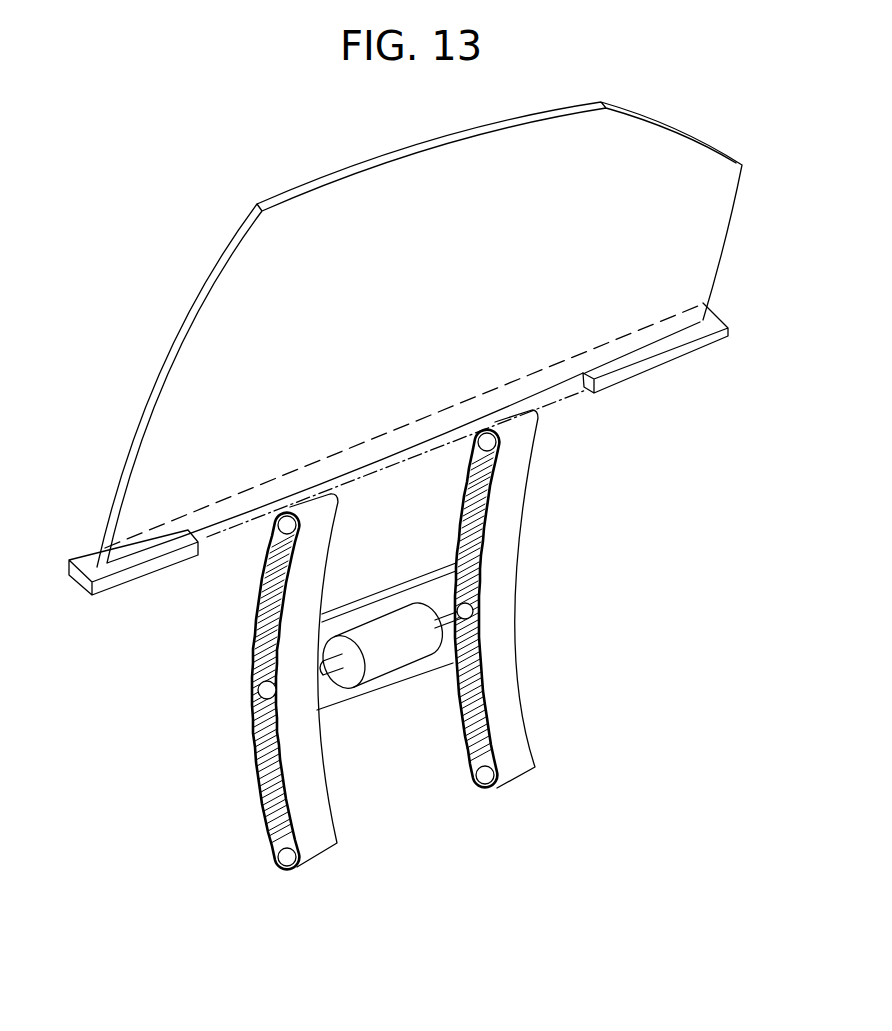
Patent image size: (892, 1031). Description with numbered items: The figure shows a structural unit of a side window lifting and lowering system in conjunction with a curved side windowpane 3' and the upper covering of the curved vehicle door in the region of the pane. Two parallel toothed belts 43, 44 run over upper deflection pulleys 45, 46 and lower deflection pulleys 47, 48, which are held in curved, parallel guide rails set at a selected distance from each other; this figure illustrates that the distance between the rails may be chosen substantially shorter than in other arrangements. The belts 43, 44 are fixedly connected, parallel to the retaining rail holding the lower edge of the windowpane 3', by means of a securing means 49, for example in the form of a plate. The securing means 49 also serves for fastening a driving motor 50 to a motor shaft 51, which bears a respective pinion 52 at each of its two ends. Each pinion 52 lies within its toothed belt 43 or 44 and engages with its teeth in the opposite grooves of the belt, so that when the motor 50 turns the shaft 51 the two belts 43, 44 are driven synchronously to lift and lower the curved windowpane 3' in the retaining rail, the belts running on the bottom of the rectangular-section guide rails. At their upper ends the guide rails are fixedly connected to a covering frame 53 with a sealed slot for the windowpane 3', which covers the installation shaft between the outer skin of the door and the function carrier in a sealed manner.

The windowpane 3' is at (436, 334).
The toothed belt 43 is at (315, 782).
The toothed belt 44 is at (512, 708).
The upper deflection pulley 45 is at (281, 526).
The upper deflection pulley 46 is at (479, 445).
The lower deflection pulley 47 is at (282, 866).
The lower deflection pulley 48 is at (478, 788).
The securing means 49 is at (339, 693).
The driving motor 50 is at (410, 647).
The motor shaft 51 is at (337, 656).
The pinion 52 is at (258, 693).
The covering frame 53 is at (663, 361).